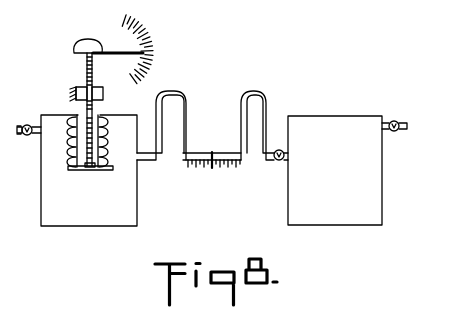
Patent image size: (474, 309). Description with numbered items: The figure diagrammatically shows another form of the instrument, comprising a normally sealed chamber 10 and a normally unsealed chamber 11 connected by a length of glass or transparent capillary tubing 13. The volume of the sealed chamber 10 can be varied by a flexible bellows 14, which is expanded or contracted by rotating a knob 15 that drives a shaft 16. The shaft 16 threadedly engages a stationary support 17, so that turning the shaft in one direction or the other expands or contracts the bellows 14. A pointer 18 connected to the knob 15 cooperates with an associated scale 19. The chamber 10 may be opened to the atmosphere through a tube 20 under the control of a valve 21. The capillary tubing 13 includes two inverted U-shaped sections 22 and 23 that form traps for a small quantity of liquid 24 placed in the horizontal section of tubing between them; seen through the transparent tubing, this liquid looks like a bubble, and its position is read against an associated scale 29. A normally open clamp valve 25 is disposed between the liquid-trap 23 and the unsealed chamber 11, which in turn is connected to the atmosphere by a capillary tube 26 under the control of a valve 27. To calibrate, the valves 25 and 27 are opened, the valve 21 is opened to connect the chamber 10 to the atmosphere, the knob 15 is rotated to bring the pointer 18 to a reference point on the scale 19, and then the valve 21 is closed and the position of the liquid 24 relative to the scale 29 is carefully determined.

The normally sealed chamber 10 is at (80, 226).
The normally unsealed chamber 11 is at (323, 225).
The capillary tubing 13 is at (188, 163).
The flexible bellows 14 is at (110, 160).
The knob 15 is at (74, 46).
The shaft 16 is at (93, 72).
The stationary support 17 is at (76, 90).
The pointer 18 is at (111, 52).
The scale 19 is at (150, 42).
The tube 20 is at (24, 124).
The valve 21 is at (26, 136).
The inverted U-shaped section 22 is at (173, 92).
The inverted U-shaped section 23 is at (260, 92).
The liquid 24 is at (213, 152).
The clamp valve 25 is at (279, 162).
The capillary tube 26 is at (402, 133).
The valve 27 is at (394, 121).
The scale 29 is at (212, 169).